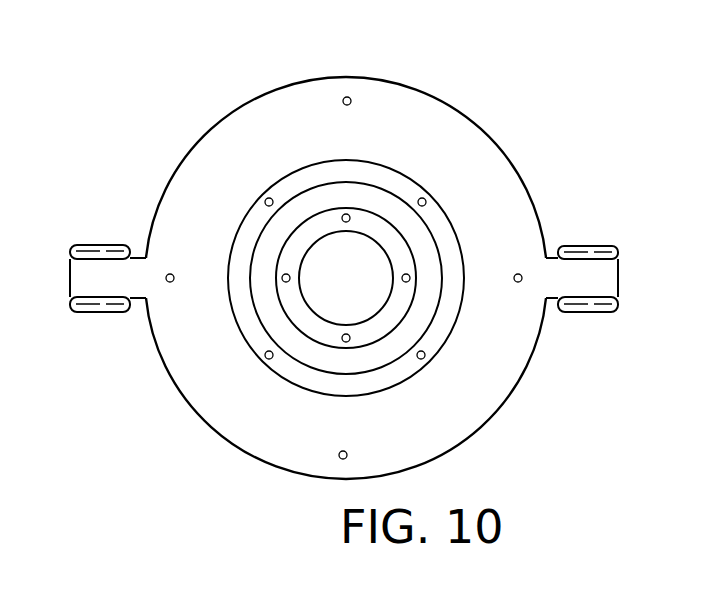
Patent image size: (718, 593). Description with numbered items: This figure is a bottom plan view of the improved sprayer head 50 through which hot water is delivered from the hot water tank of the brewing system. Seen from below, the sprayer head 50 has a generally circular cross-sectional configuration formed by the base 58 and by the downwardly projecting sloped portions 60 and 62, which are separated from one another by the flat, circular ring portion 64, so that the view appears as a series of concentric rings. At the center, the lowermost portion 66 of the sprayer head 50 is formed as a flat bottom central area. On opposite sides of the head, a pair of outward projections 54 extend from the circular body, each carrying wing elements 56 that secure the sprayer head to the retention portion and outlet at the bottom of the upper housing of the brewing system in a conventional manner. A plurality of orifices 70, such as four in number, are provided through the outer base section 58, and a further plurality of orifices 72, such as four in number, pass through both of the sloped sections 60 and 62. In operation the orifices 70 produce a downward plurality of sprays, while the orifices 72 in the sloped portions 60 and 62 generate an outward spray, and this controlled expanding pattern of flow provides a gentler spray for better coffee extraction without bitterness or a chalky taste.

The sprayer head 50 is at (492, 163).
The outward projections 54 is at (103, 270).
The wing elements 56 is at (600, 246).
The base 58 is at (432, 122).
The sloped portion 60 is at (437, 334).
The sloped portion 62 is at (373, 223).
The flat, circular ring portion 64 is at (425, 302).
The lowermost portion 66 is at (323, 257).
The orifices 70 is at (349, 98).
The orifices 72 is at (346, 213).